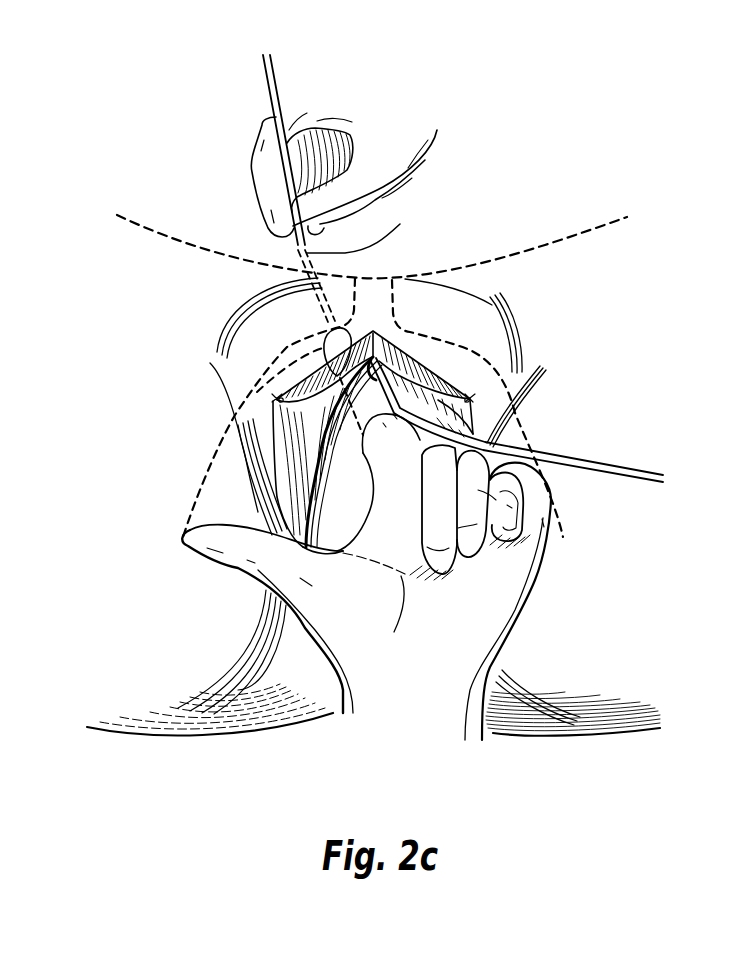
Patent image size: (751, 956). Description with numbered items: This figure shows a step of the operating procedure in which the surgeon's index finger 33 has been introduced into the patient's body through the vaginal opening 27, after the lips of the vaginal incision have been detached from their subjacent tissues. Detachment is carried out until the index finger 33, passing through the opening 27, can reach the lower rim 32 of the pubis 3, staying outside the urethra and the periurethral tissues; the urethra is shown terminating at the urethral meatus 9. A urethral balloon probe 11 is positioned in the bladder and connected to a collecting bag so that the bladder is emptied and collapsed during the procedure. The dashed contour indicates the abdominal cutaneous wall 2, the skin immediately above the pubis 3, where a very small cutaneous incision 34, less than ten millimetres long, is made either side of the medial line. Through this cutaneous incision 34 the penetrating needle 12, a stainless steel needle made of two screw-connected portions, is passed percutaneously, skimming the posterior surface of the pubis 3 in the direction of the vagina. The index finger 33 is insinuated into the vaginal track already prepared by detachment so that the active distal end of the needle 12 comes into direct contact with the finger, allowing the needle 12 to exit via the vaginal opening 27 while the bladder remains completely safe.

The abdominal cutaneous wall 2 is at (513, 232).
The pubis 3 is at (253, 313).
The urethral meatus 9 is at (380, 367).
The urethral balloon probe 11 is at (627, 467).
The penetrating needle 12 is at (262, 82).
The vaginal opening 27 is at (318, 479).
The lower rim of the pubis 32 is at (330, 327).
The index finger 33 is at (257, 392).
The cutaneous incision 34 is at (368, 231).